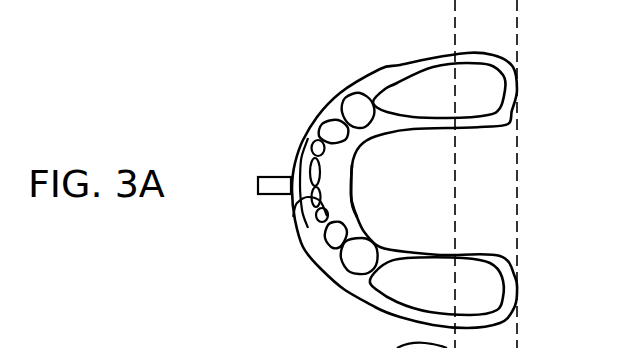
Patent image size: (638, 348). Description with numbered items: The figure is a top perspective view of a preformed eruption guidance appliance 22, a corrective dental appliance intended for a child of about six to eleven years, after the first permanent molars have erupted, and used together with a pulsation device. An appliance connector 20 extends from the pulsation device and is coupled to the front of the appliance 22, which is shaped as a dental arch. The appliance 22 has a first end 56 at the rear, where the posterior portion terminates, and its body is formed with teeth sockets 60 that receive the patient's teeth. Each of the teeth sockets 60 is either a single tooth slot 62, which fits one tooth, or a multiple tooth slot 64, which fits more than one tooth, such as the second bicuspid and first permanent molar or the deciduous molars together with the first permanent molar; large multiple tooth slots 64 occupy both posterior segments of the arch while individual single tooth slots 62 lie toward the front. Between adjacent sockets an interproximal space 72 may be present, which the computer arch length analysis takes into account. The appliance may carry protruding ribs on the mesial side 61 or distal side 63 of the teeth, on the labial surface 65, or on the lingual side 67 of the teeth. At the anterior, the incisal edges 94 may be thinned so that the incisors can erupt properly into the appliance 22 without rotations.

The preformed eruption guidance appliance 22 is at (276, 52).
The first end 56 is at (517, 88).
The multiple tooth slot 64 is at (437, 79).
The single tooth slot 62 is at (348, 107).
The distal side 63 is at (320, 134).
The incisal edges 94 is at (318, 113).
The mesial side 61 is at (300, 150).
The appliance connector 20 is at (258, 186).
The labial surface 65 is at (293, 212).
The teeth sockets 60 is at (306, 239).
The interproximal space 72 is at (335, 262).
The lingual side 67 is at (352, 178).